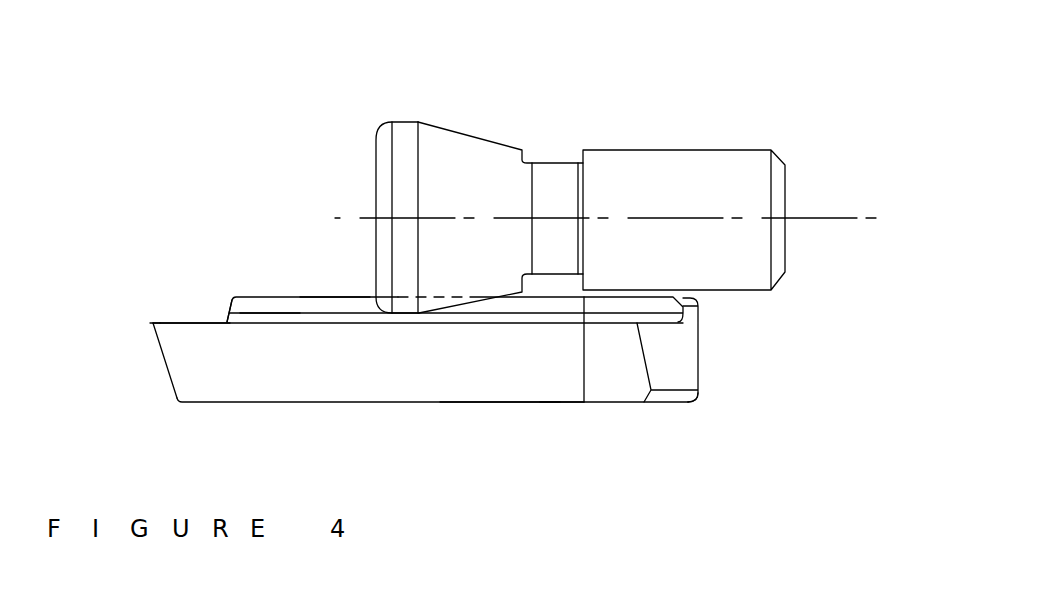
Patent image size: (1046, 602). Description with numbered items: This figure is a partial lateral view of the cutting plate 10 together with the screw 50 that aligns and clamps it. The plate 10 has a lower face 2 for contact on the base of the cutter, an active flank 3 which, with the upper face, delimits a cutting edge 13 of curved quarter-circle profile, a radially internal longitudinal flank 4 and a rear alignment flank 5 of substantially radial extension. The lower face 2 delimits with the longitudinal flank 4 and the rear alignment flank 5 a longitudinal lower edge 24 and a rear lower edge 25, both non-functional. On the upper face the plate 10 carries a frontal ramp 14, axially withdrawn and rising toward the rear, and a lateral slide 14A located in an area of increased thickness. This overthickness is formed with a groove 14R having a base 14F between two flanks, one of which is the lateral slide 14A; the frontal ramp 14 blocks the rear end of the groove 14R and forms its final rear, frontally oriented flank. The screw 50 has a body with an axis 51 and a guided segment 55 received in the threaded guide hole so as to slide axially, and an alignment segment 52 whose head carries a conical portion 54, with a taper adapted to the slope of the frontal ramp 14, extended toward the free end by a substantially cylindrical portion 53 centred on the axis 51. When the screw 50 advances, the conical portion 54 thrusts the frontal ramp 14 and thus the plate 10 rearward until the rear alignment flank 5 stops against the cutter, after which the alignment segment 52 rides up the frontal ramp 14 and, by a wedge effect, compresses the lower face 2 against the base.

The screw 50 is at (283, 93).
The axis 51 is at (843, 218).
The alignment segment 52 is at (397, 82).
The cylindrical portion 53 is at (408, 117).
The conical portion 54 is at (470, 137).
The guided segment 55 is at (665, 148).
The lower face 2 is at (277, 400).
The active flank 3 is at (233, 363).
The plate 10 is at (192, 337).
The cutting edge 13 is at (150, 323).
The frontal ramp 14 is at (465, 305).
The lateral slide 14A is at (332, 307).
The base of the groove 14F is at (311, 312).
The groove 14R is at (277, 305).
The radially internal longitudinal flank 4 is at (498, 365).
The longitudinal lower edge 24 is at (548, 403).
The rear alignment flank 5 is at (648, 368).
The rear lower edge 25 is at (697, 403).